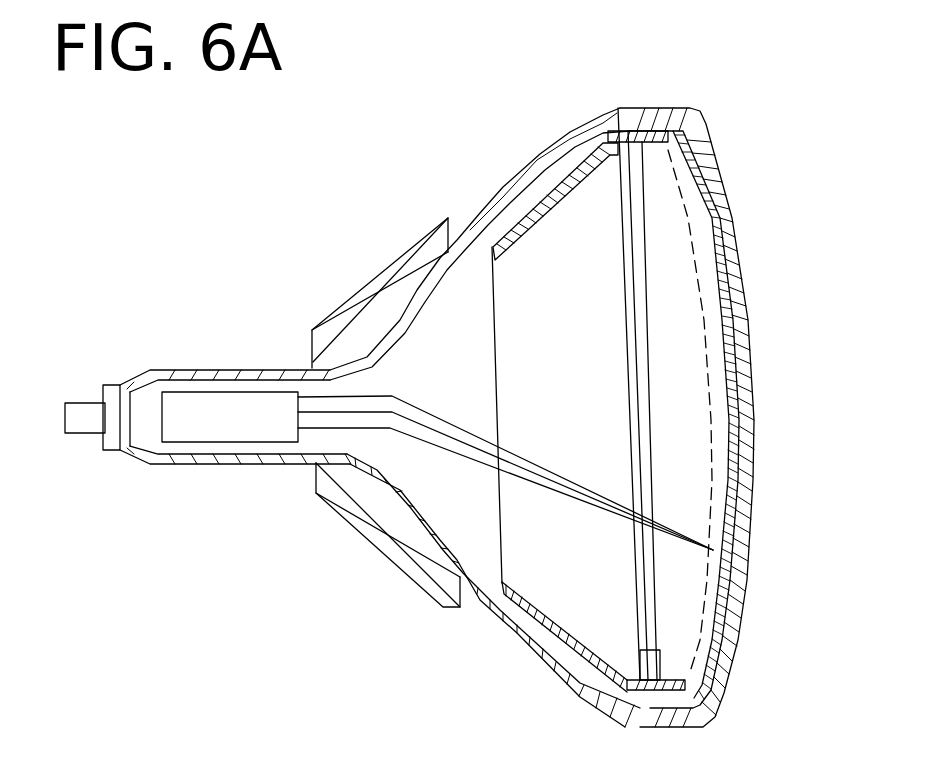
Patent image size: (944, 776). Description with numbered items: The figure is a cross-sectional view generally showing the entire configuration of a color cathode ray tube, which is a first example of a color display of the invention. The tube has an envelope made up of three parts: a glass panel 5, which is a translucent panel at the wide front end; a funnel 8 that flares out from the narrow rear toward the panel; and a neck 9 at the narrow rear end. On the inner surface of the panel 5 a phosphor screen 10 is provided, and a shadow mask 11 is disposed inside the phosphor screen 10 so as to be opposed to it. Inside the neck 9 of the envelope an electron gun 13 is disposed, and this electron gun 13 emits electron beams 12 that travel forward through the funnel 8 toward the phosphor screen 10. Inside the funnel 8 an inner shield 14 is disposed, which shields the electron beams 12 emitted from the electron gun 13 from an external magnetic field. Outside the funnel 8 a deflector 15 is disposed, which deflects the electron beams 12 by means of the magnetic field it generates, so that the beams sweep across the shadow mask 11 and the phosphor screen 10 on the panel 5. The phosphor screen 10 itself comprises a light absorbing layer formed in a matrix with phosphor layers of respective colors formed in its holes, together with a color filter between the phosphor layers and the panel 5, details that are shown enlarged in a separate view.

The glass panel 5 is at (738, 228).
The funnel 8 is at (503, 187).
The neck 9 is at (212, 370).
The phosphor screen 10 is at (725, 382).
The shadow mask 11 is at (713, 467).
The electron beams 12 is at (448, 433).
The electron gun 13 is at (235, 442).
The inner shield 14 is at (522, 628).
The deflector 15 is at (357, 537).